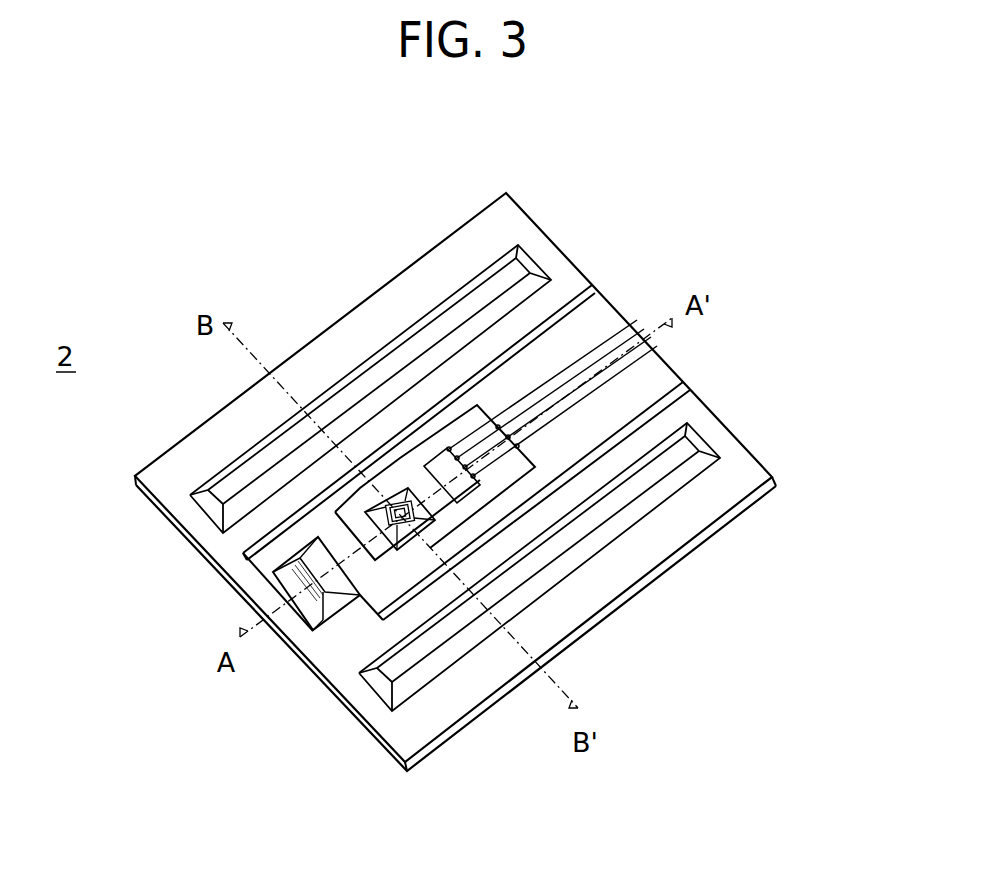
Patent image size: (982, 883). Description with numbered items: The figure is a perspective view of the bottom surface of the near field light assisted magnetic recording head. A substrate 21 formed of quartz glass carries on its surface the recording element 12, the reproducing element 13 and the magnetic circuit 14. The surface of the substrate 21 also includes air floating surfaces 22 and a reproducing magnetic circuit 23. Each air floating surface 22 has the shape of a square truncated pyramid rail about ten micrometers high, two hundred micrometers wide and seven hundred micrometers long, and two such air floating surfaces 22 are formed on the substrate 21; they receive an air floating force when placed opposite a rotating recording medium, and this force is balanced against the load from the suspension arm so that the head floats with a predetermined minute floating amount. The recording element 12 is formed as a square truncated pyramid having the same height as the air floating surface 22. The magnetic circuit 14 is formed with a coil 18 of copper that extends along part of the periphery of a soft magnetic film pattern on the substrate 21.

The recording element 12 is at (407, 528).
The reproducing element 13 is at (312, 605).
The magnetic circuit 14 is at (514, 470).
The coil 18 is at (608, 384).
The substrate 21 is at (752, 505).
The air floating surfaces 22 is at (500, 277).
The reproducing magnetic circuit 23 is at (243, 553).